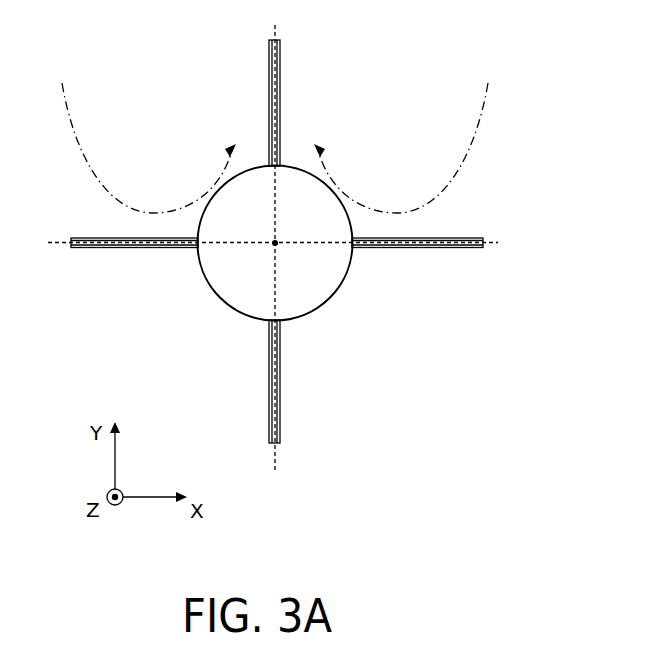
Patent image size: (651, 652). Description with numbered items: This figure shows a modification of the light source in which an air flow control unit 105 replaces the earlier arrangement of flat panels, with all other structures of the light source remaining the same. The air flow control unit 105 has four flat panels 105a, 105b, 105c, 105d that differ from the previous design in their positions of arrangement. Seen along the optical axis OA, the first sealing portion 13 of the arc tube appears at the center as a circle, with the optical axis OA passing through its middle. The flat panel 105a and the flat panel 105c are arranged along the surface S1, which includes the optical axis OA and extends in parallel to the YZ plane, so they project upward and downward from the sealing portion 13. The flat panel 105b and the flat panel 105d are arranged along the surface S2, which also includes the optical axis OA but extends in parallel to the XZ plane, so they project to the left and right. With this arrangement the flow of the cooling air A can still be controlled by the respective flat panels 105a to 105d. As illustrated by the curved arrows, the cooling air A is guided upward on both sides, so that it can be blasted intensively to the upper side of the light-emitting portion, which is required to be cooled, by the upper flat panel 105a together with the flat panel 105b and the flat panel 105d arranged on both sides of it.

The air flow control unit 105 is at (415, 81).
The flat panel 105a is at (280, 85).
The flat panel 105b is at (128, 248).
The flat panel 105c is at (280, 408).
The flat panel 105d is at (468, 248).
The first sealing portion 13 is at (230, 302).
The optical axis OA is at (278, 245).
The surface S1 is at (276, 453).
The surface S2 is at (57, 237).
The cooling air A is at (165, 210).